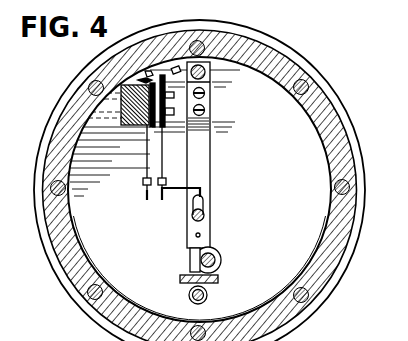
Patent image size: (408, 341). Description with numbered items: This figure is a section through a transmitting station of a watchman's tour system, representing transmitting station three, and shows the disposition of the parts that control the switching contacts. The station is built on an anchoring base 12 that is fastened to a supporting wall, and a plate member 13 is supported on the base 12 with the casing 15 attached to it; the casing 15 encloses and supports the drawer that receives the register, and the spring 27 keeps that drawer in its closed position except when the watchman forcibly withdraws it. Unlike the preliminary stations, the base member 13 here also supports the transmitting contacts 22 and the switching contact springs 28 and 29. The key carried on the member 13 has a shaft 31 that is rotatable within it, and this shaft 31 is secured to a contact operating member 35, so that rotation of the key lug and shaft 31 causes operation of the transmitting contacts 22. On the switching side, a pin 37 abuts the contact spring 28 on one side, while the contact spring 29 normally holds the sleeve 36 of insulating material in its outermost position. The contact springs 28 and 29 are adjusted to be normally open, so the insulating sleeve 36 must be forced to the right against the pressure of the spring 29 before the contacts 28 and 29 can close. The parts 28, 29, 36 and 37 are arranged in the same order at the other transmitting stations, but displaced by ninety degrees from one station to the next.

The anchoring base 12 is at (277, 44).
The casing 15 is at (327, 93).
The plate member 13 is at (283, 197).
The transmitting contacts 22 is at (146, 160).
The contact spring 29 is at (210, 163).
The contact operating member 35 is at (178, 192).
The shaft 31 is at (205, 215).
The pin 37 is at (221, 257).
The insulating sleeve 36 is at (190, 253).
The contact spring 28 is at (192, 262).
The spring 27 is at (207, 296).